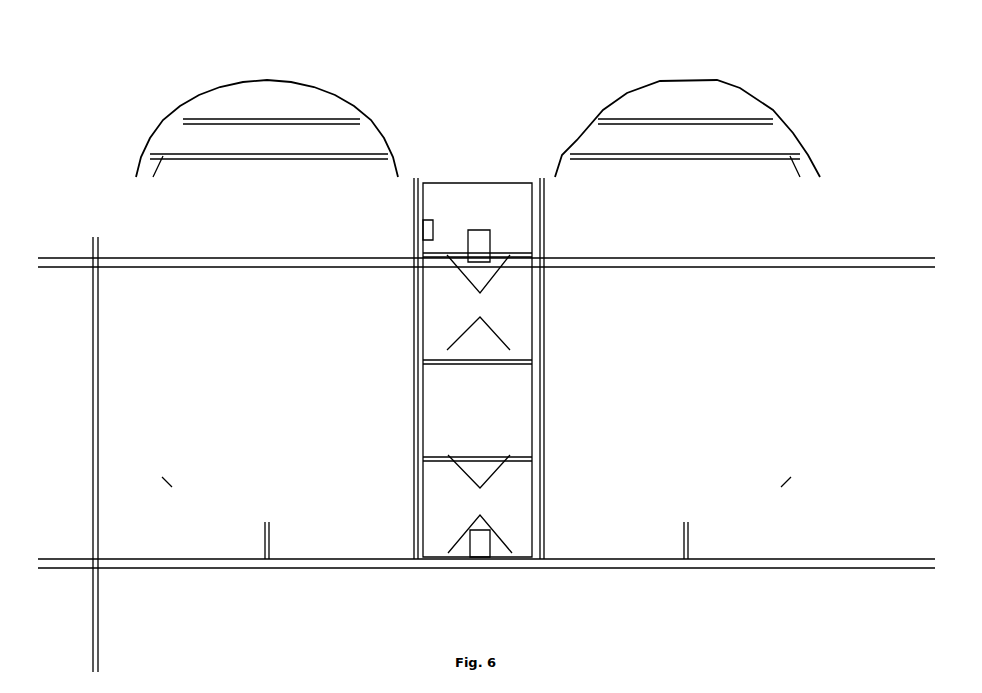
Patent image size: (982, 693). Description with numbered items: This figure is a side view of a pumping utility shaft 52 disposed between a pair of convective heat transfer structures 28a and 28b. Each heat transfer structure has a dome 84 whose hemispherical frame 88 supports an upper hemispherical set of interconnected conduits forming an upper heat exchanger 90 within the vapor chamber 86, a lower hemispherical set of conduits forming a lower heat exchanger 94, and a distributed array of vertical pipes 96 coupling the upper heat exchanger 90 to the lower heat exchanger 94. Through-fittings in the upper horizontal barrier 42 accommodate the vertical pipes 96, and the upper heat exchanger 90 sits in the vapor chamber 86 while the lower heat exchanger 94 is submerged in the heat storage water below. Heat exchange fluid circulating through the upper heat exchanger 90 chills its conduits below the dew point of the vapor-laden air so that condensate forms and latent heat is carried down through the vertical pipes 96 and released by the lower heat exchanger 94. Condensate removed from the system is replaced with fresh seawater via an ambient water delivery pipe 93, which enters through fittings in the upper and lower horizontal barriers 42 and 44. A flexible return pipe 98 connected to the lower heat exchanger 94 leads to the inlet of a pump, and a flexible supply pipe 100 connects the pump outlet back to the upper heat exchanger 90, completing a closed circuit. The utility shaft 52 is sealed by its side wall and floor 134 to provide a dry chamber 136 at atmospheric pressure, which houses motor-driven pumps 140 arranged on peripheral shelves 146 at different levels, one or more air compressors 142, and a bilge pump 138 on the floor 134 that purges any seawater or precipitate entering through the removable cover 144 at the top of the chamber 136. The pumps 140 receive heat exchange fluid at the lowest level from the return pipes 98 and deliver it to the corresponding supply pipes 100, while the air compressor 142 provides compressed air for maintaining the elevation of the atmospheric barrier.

The heat transfer structure 28a is at (158, 91).
The heat transfer structure 28b is at (818, 91).
The upper horizontal barrier 42 is at (78, 268).
The lower horizontal barrier 44 is at (141, 570).
The pump utility shaft 52 is at (479, 328).
The hemispherical frame 88 is at (318, 88).
The upper heat exchanger 90 is at (220, 115).
The ambient water delivery pipe 93 is at (99, 627).
The lower heat exchanger 94 is at (172, 487).
The vertical pipes 96 is at (151, 347).
The flexible return pipe 98 is at (264, 540).
The flexible supply pipe 100 is at (265, 228).
The floor 134 is at (500, 567).
The dry chamber 136 is at (477, 389).
The bilge pump 138 is at (480, 551).
The pumps 140 is at (478, 369).
The air compressor 142 is at (428, 220).
The removable cover 144 is at (518, 183).
The peripheral shelves 146 is at (449, 260).
The vapor chamber 86 is at (895, 240).
The dome 84 is at (878, 408).